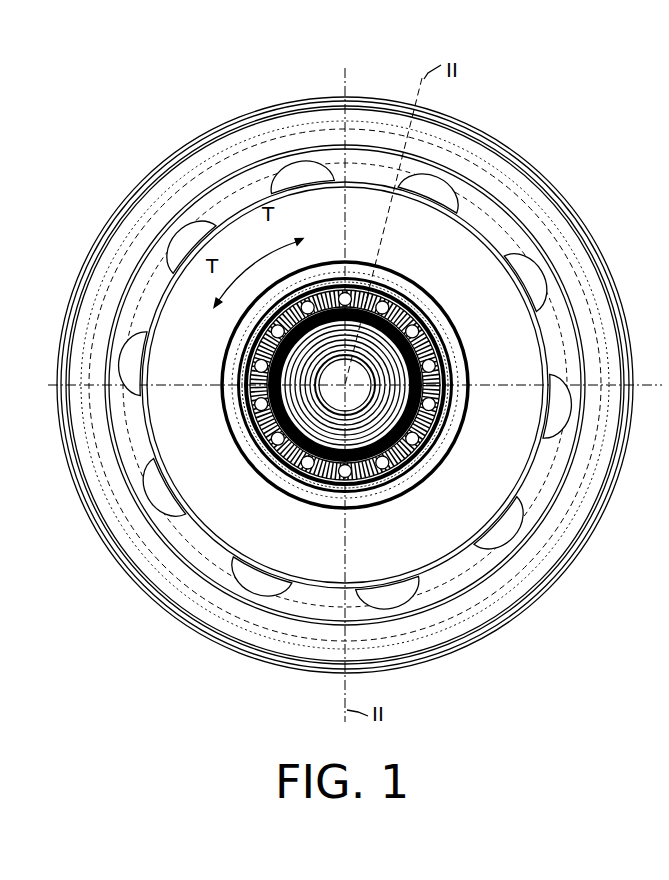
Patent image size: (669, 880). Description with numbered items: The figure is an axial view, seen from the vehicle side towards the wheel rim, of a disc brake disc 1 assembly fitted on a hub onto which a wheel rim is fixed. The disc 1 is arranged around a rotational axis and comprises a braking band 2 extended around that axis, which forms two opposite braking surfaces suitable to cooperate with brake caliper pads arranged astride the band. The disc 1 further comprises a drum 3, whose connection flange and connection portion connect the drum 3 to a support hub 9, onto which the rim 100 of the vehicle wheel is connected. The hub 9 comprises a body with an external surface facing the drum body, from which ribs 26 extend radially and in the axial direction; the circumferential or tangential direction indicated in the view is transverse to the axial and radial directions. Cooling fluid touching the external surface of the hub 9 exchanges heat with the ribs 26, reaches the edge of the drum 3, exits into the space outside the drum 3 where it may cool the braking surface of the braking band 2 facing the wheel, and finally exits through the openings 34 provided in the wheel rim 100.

The disc brake disc 1 is at (472, 252).
The braking band 2 is at (196, 333).
The drum 3 is at (428, 340).
The support hub 9 is at (407, 462).
The ribs 26 is at (348, 287).
The openings 34 is at (437, 185).
The rim 100 is at (117, 553).